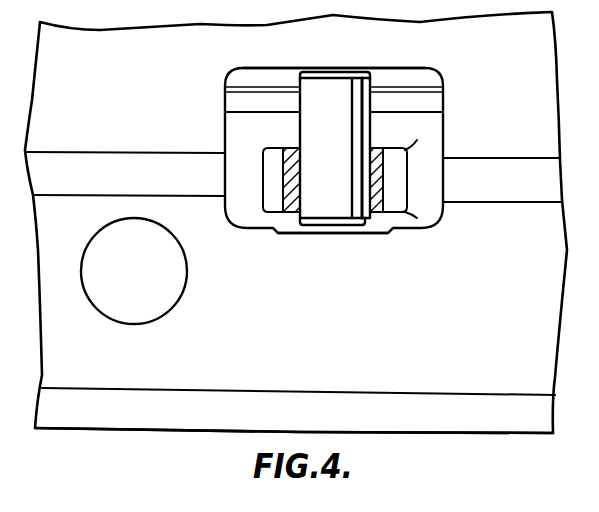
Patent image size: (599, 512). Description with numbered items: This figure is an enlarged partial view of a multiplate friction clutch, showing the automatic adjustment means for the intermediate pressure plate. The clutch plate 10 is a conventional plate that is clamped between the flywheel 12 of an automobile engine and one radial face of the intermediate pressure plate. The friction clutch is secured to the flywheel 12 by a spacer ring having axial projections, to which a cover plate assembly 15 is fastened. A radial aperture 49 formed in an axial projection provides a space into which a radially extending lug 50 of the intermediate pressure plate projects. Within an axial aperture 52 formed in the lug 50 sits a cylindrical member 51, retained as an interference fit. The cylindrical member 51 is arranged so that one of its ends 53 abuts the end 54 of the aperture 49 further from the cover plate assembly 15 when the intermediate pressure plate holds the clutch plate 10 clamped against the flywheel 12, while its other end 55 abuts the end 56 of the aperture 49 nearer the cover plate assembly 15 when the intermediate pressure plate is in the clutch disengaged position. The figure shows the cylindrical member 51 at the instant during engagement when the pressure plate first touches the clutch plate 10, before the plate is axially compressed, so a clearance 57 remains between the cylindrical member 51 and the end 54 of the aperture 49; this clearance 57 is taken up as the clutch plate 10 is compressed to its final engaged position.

The clutch plate 10 is at (240, 100).
The flywheel 12 is at (115, 102).
The cover plate assembly 15 is at (125, 437).
The radial aperture 49 is at (245, 130).
The lug 50 is at (378, 181).
The cylindrical member 51 is at (337, 205).
The axial aperture 52 is at (292, 177).
The end of cylindrical member 53 is at (315, 70).
The end of aperture 54 is at (278, 54).
The other end of cylindrical member 55 is at (342, 220).
The end of aperture 56 is at (290, 233).
The clearance 57 is at (336, 70).